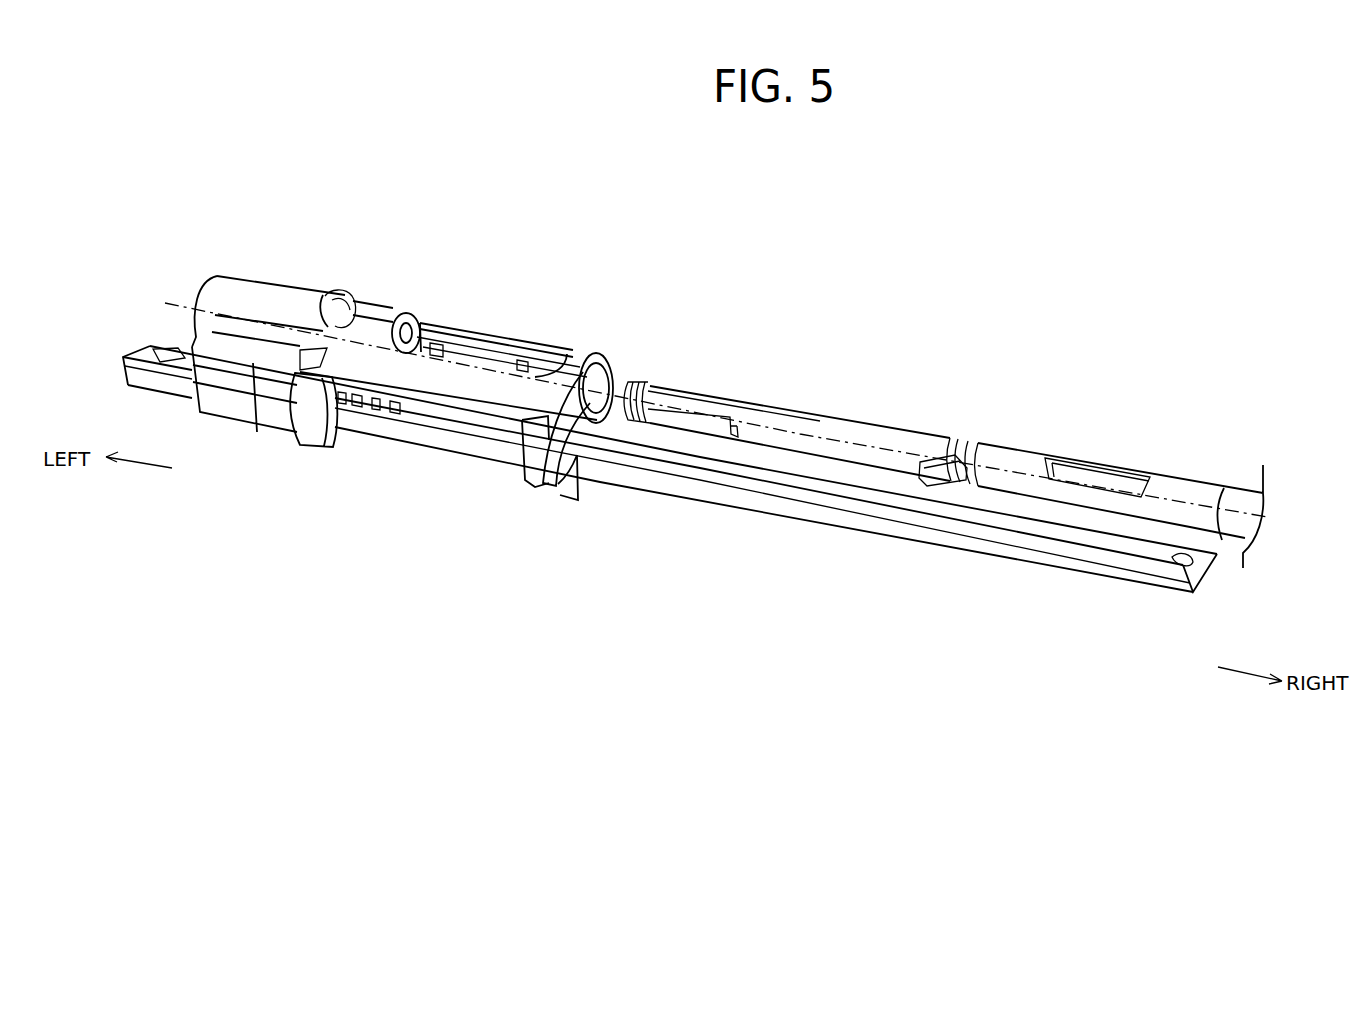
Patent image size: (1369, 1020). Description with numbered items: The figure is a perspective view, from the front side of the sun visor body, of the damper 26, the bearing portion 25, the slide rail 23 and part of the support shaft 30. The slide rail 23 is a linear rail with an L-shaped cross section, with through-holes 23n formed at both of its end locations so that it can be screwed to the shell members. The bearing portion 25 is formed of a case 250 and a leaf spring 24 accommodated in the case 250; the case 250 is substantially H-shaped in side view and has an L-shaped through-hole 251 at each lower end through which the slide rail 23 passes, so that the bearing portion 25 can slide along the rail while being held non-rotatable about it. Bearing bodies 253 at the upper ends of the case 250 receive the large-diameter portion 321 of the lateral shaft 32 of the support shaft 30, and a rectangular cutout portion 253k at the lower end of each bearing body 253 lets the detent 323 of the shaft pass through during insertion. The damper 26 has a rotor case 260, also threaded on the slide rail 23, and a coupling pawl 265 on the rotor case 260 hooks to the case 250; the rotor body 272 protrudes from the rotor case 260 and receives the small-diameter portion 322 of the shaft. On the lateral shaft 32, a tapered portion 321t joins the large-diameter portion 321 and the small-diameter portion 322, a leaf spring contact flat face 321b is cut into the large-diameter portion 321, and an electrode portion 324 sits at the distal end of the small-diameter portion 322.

The slide rail 23 is at (770, 522).
The through-holes 23n is at (160, 349).
The leaf spring 24 is at (480, 370).
The bearing portion 25 is at (426, 378).
The damper 26 is at (268, 269).
The support shaft 30 is at (952, 437).
The lateral shaft 32 is at (1091, 453).
The case 250 is at (474, 404).
The L-shaped through-hole 251 is at (351, 425).
The bearing body 253 is at (424, 318).
The rectangular cutout portion 253k is at (612, 425).
The rotor case 260 is at (252, 365).
The coupling pawl 265 is at (313, 347).
The rotor body 272 is at (350, 316).
The large-diameter portion 321 is at (1180, 481).
The leaf spring contact flat face 321b is at (1105, 473).
The tapered portion 321t is at (977, 453).
The small-diameter portion 322 is at (812, 416).
The detent 323 is at (937, 462).
The electrode portion 324 is at (698, 419).